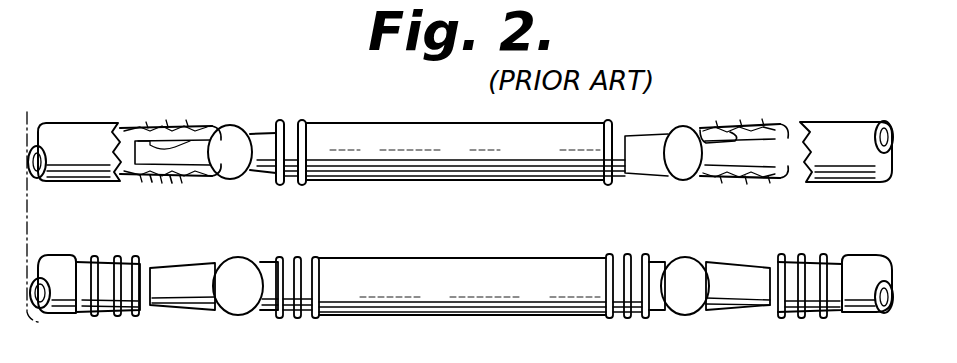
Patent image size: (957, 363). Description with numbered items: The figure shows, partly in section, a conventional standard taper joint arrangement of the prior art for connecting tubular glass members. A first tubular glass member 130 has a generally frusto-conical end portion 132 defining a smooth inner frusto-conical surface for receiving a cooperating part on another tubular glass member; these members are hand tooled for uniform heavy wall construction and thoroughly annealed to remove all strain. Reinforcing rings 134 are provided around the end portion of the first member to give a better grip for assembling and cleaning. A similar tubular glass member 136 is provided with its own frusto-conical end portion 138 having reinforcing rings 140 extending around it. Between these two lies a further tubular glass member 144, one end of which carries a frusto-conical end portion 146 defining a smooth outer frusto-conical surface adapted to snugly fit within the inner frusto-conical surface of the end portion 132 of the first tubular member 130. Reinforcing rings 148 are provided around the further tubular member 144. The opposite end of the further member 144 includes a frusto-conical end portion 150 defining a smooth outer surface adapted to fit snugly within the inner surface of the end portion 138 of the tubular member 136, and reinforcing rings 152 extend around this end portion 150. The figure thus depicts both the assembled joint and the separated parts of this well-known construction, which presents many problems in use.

The first tubular glass member 130 is at (74, 219).
The frusto-conical end portion 132 is at (144, 195).
The reinforcing rings 134 is at (146, 269).
The tubular glass member 136 is at (846, 217).
The frusto-conical end portion 138 is at (795, 218).
The reinforcing rings 140 is at (767, 210).
The further tubular glass member 144 is at (456, 219).
The frusto-conical end portion 146 is at (214, 222).
The reinforcing rings 148 is at (287, 241).
The frusto-conical end portion 150 is at (697, 198).
The reinforcing rings 152 is at (630, 219).